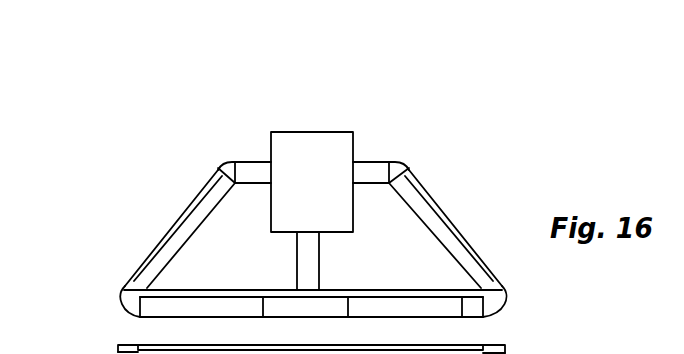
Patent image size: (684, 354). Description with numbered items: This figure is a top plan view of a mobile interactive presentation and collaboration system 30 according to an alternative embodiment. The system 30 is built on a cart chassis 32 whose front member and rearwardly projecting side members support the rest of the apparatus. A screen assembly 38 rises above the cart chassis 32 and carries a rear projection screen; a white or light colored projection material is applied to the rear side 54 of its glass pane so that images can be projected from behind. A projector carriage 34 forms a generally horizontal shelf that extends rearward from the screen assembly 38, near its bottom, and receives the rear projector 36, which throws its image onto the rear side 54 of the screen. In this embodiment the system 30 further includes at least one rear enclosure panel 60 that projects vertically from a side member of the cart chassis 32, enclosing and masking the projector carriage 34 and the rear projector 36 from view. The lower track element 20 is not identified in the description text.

The track rail 20 is at (388, 346).
The mobile interactive presentation and collaboration system 30 is at (318, 206).
The cart chassis 32 is at (441, 187).
The projector carriage 34 is at (311, 262).
The rear projector 36 is at (353, 155).
The screen assembly 38 is at (289, 239).
The rear side 54 is at (311, 210).
The rear enclosure panel 60 is at (165, 233).